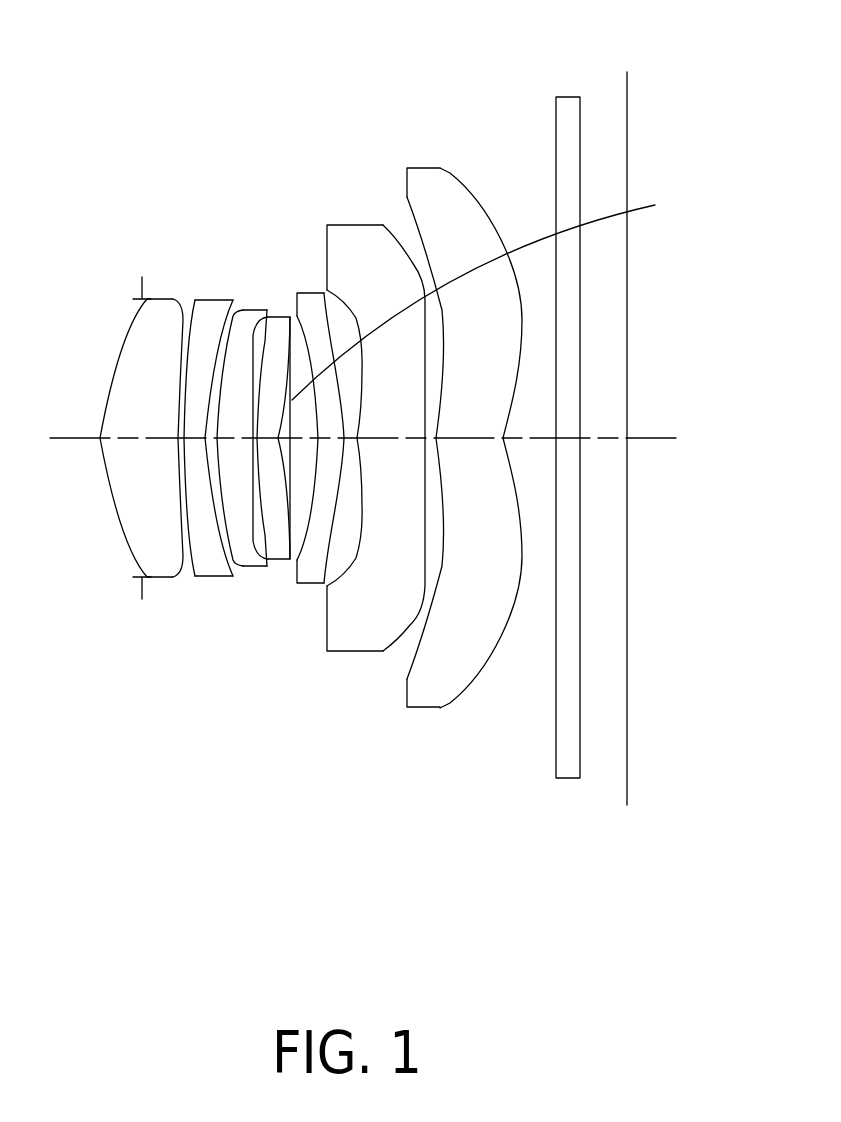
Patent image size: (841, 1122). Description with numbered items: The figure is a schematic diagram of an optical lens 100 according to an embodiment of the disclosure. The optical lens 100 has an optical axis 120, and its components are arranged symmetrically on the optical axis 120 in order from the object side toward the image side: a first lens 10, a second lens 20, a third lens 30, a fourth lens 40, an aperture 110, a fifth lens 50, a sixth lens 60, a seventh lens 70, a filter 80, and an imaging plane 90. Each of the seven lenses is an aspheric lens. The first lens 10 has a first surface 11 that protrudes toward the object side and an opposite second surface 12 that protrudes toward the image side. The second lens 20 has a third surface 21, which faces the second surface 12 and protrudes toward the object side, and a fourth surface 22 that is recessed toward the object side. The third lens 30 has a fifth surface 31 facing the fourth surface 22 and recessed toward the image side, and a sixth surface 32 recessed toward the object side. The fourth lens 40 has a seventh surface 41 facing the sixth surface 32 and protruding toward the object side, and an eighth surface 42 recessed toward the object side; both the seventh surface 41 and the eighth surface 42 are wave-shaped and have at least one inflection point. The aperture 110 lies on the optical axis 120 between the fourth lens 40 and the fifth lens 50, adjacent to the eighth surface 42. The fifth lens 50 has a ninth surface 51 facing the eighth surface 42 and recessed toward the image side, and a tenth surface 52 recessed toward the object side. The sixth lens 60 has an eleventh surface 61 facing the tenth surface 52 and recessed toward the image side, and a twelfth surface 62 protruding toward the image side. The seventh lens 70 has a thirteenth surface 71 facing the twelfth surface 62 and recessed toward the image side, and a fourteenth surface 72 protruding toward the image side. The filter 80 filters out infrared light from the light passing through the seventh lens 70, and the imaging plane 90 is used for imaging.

The first lens 10 is at (117, 437).
The first surface 11 is at (128, 338).
The second surface 12 is at (182, 355).
The second lens 20 is at (131, 409).
The third surface 21 is at (186, 385).
The fourth surface 22 is at (208, 407).
The third lens 30 is at (159, 407).
The fifth surface 31 is at (219, 453).
The sixth surface 32 is at (259, 494).
The fourth lens 40 is at (235, 434).
The seventh surface 41 is at (256, 496).
The eighth surface 42 is at (287, 503).
The fifth lens 50 is at (304, 465).
The ninth surface 51 is at (311, 528).
The tenth surface 52 is at (330, 545).
The sixth lens 60 is at (356, 477).
The eleventh surface 61 is at (353, 652).
The twelfth surface 62 is at (406, 620).
The seventh lens 70 is at (441, 430).
The thirteenth surface 71 is at (418, 648).
The fourteenth surface 72 is at (458, 182).
The filter 80 is at (568, 97).
The imaging plane 90 is at (627, 292).
The optical lens 100 is at (305, 33).
The aperture 110 is at (499, 297).
The optical axis 120 is at (667, 437).